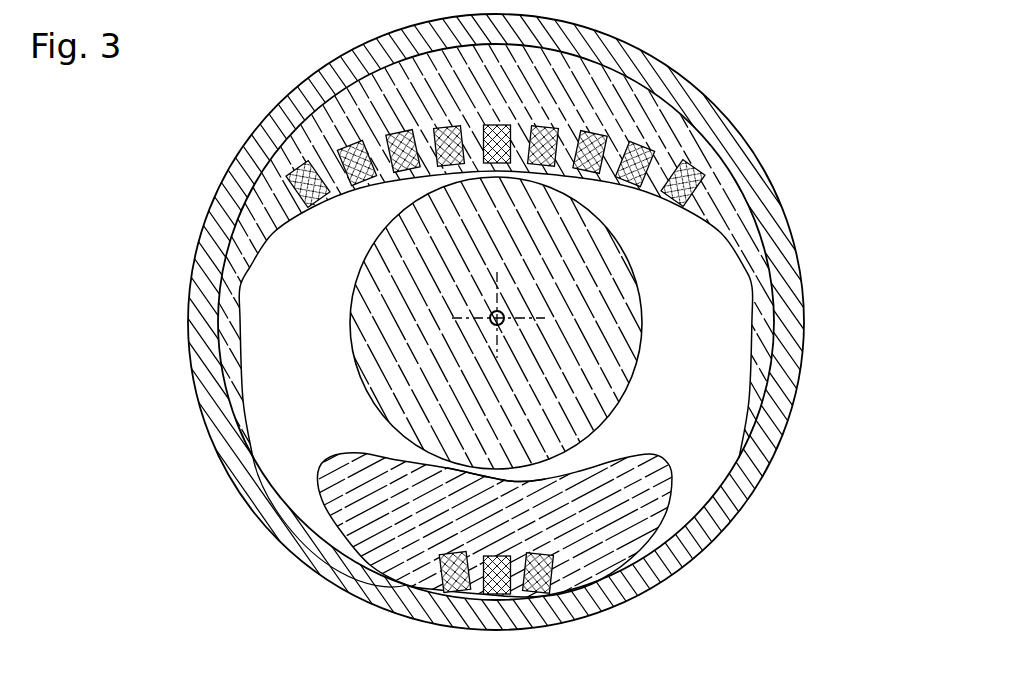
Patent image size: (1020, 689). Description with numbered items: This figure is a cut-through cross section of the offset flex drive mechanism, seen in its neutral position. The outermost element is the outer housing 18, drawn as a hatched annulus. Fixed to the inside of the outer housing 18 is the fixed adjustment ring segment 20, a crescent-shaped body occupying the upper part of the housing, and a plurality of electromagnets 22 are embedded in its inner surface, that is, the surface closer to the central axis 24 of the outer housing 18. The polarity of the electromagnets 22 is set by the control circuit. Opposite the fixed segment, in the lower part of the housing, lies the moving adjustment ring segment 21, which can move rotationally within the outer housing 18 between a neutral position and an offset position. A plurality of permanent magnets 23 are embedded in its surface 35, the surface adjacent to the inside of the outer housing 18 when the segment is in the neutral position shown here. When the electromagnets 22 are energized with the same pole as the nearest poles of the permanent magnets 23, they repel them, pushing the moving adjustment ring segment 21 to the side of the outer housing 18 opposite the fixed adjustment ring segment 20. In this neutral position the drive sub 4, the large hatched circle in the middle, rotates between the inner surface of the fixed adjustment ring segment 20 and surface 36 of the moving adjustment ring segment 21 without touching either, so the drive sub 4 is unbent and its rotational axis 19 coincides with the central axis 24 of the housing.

The outer housing 18 is at (677, 97).
The fixed adjustment ring segment 20 is at (663, 120).
The electromagnets 22 is at (683, 180).
The drive sub 4 is at (365, 296).
The rotational axis 19 is at (505, 314).
The central axis 24 is at (505, 317).
The surface 36 is at (520, 480).
The moving adjustment ring segment 21 is at (623, 510).
The permanent magnets 23 is at (553, 577).
The surface 35 is at (467, 598).